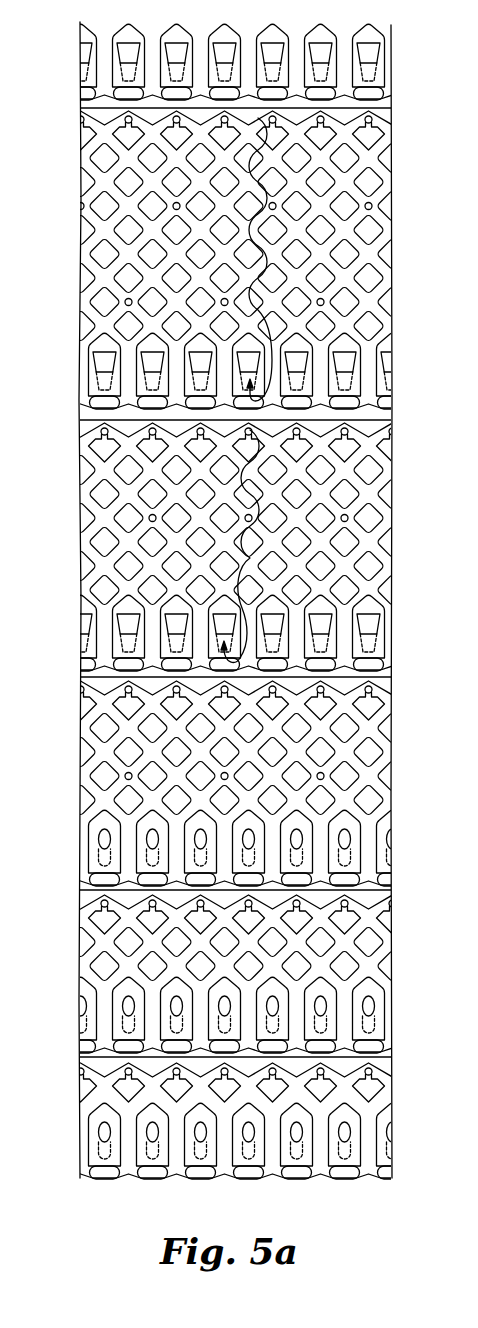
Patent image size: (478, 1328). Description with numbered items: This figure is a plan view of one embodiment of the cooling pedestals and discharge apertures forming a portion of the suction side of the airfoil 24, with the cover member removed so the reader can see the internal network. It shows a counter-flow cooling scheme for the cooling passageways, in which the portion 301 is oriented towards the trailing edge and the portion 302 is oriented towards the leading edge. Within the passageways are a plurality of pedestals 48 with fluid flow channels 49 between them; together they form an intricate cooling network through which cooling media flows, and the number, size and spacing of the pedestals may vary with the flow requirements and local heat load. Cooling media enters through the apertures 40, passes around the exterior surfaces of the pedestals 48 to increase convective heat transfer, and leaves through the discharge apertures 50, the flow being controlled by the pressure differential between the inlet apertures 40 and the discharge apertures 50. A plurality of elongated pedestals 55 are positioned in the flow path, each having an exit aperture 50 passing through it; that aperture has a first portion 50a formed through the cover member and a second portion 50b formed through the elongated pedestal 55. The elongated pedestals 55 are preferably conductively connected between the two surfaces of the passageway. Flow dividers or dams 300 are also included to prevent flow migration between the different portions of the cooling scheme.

The airfoil 24 is at (80, 1142).
The apertures 40 is at (172, 130).
The pedestals 48 is at (233, 265).
The fluid flow channels 49 is at (100, 233).
The discharge apertures 50 is at (104, 362).
The first portion 50a is at (348, 360).
The second portion 50b is at (345, 382).
The elongated pedestals 55 is at (86, 383).
The flow dividers/dams 300 is at (380, 418).
The portion 301 is at (393, 96).
The portion 302 is at (392, 1175).